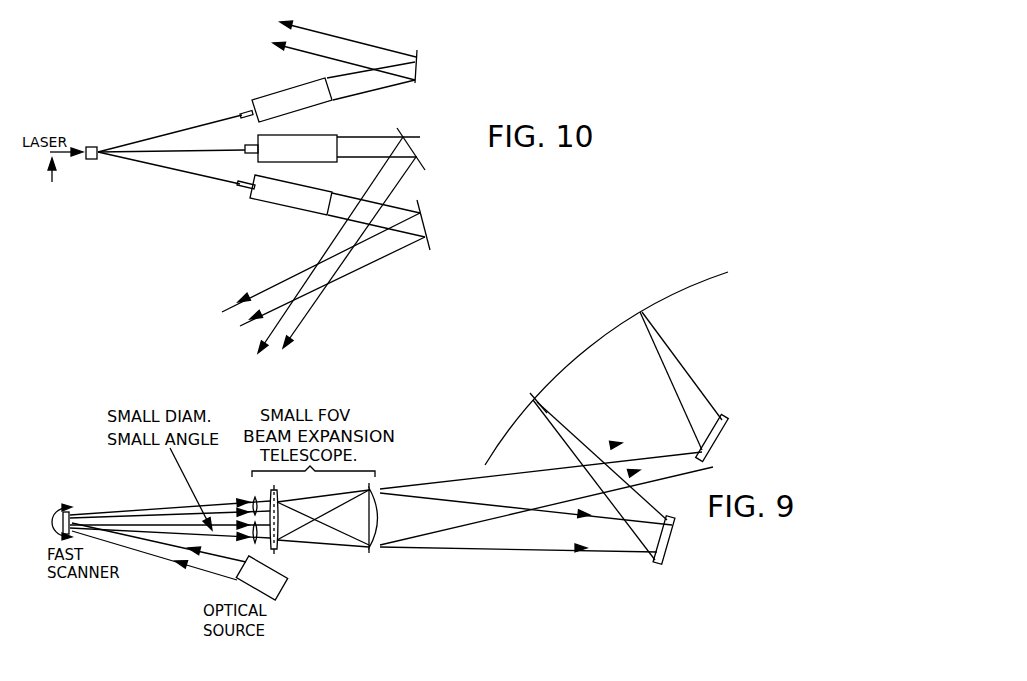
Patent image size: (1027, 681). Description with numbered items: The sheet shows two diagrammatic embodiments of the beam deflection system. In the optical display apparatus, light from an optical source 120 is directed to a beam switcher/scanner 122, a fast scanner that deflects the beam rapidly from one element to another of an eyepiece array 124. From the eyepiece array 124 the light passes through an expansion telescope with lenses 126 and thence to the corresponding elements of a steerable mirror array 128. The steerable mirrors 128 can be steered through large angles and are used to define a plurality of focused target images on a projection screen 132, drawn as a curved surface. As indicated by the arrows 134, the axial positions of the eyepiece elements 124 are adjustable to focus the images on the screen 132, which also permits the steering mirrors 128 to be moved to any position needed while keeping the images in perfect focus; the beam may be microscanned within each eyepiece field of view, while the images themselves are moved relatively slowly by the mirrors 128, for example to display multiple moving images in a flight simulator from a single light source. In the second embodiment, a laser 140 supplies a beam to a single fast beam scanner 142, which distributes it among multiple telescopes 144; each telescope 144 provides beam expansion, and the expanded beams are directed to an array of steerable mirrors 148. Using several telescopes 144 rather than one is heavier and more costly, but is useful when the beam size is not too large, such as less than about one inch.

In FIG. 9, the optical source 120 is at (287, 572).
In FIG. 9, the beam switcher/scanner 122 is at (70, 511).
In FIG. 9, the eyepiece array 124 is at (262, 476).
In FIG. 9, the lenses 126 is at (368, 488).
In FIG. 9, the steerable mirror array 128 is at (724, 416).
In FIG. 9, the projection screen 132 is at (628, 322).
In FIG. 9, the arrows 134 is at (236, 549).
In FIG. 10, the laser 140 is at (50, 182).
In FIG. 10, the fast beam scanner 142 is at (95, 147).
In FIG. 10, the telescopes 144 is at (255, 97).
In FIG. 10, the steerable mirrors 148 is at (420, 67).